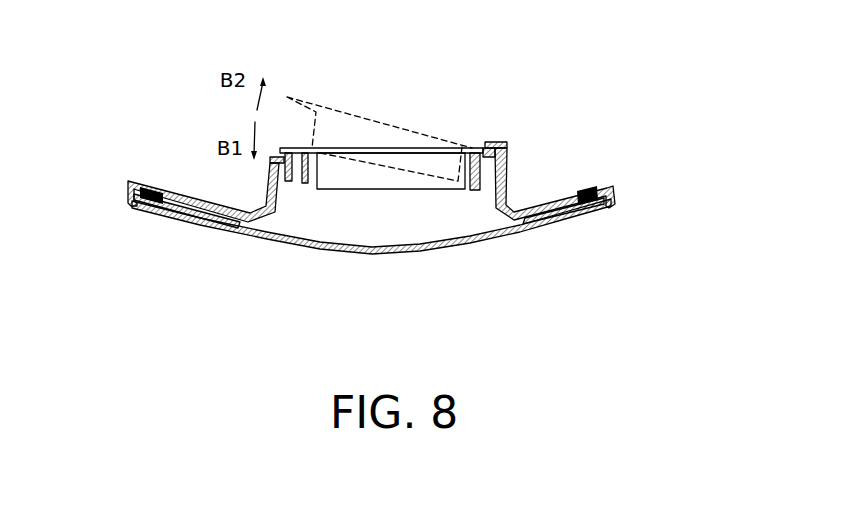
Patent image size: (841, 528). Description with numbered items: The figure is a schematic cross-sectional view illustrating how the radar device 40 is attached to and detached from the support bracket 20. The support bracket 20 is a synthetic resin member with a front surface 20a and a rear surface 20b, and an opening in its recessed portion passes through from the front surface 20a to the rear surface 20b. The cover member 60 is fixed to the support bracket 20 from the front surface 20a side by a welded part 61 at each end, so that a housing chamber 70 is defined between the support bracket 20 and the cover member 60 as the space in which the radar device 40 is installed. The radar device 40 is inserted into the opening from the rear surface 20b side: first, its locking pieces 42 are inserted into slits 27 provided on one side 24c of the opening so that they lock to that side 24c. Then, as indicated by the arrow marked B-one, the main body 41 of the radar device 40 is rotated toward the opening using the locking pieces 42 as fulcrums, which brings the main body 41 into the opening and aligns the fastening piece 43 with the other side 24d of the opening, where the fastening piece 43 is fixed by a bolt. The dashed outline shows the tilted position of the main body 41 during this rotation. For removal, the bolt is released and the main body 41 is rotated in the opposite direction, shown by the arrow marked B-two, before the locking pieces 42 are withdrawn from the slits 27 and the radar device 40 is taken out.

The support bracket 20 is at (371, 161).
The front surface 20a is at (506, 222).
The rear surface 20b is at (507, 146).
The one side of the opening 24c is at (488, 100).
The another side of the opening 24d is at (310, 160).
The slits 27 is at (490, 146).
The radar device 40 is at (398, 158).
The main body 41 is at (372, 149).
The locking pieces 42 is at (479, 150).
The fastening piece 43 is at (287, 148).
The cover member 60 is at (334, 250).
The welded part 61 is at (147, 206).
The housing chamber 70 is at (437, 218).